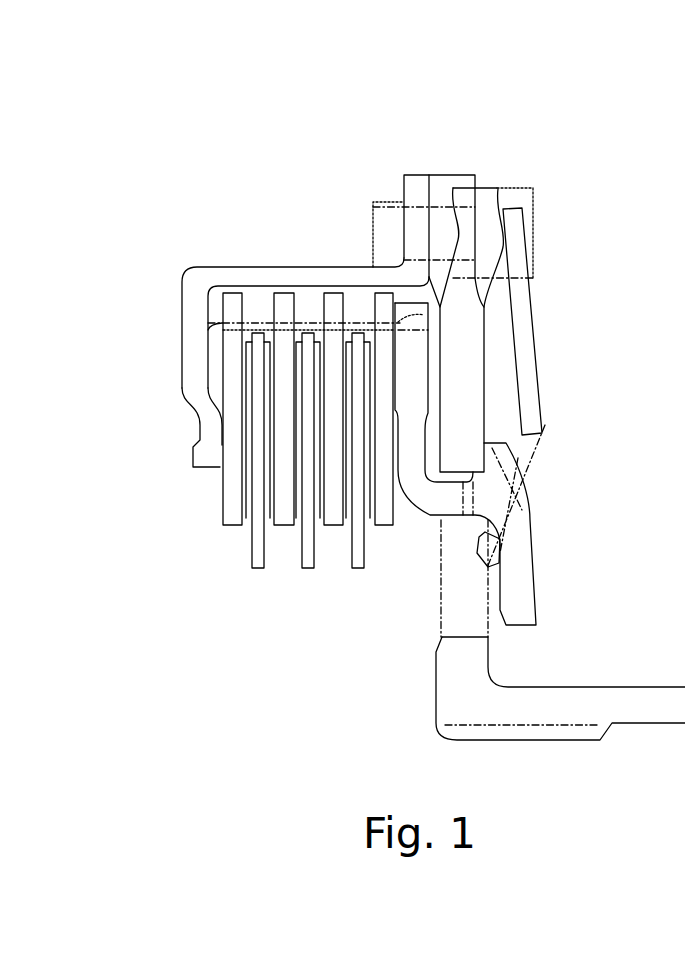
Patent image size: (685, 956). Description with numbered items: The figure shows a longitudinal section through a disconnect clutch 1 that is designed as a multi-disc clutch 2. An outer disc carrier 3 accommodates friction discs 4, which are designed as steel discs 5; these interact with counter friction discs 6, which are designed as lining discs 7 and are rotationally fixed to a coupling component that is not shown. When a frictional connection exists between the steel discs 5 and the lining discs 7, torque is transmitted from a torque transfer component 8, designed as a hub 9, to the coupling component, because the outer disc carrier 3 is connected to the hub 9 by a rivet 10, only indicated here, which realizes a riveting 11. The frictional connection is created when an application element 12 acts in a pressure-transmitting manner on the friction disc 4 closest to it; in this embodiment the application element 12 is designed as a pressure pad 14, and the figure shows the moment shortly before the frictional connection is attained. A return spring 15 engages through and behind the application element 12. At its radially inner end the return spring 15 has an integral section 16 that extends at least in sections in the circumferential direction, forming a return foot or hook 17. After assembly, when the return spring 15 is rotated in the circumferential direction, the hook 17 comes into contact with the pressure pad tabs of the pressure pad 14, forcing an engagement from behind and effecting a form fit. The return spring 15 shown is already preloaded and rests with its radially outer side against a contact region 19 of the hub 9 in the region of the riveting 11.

The disconnect clutch 1 is at (398, 403).
The multi-disc clutch 2 is at (592, 128).
The outer disc carrier 3 is at (258, 280).
The friction discs 4 is at (265, 469).
The steel discs 5 is at (233, 473).
The counter friction discs 6 is at (274, 509).
The lining discs 7 is at (257, 556).
The torque transfer component 8 is at (503, 693).
The hub 9 is at (445, 707).
The rivet 10 is at (390, 203).
The riveting 11 is at (415, 160).
The application element 12 is at (559, 540).
The pressure pad 14 is at (520, 597).
The return spring 15 is at (520, 389).
The integral section 16 is at (577, 552).
The hook 17 is at (490, 545).
The contact region 19 is at (505, 188).